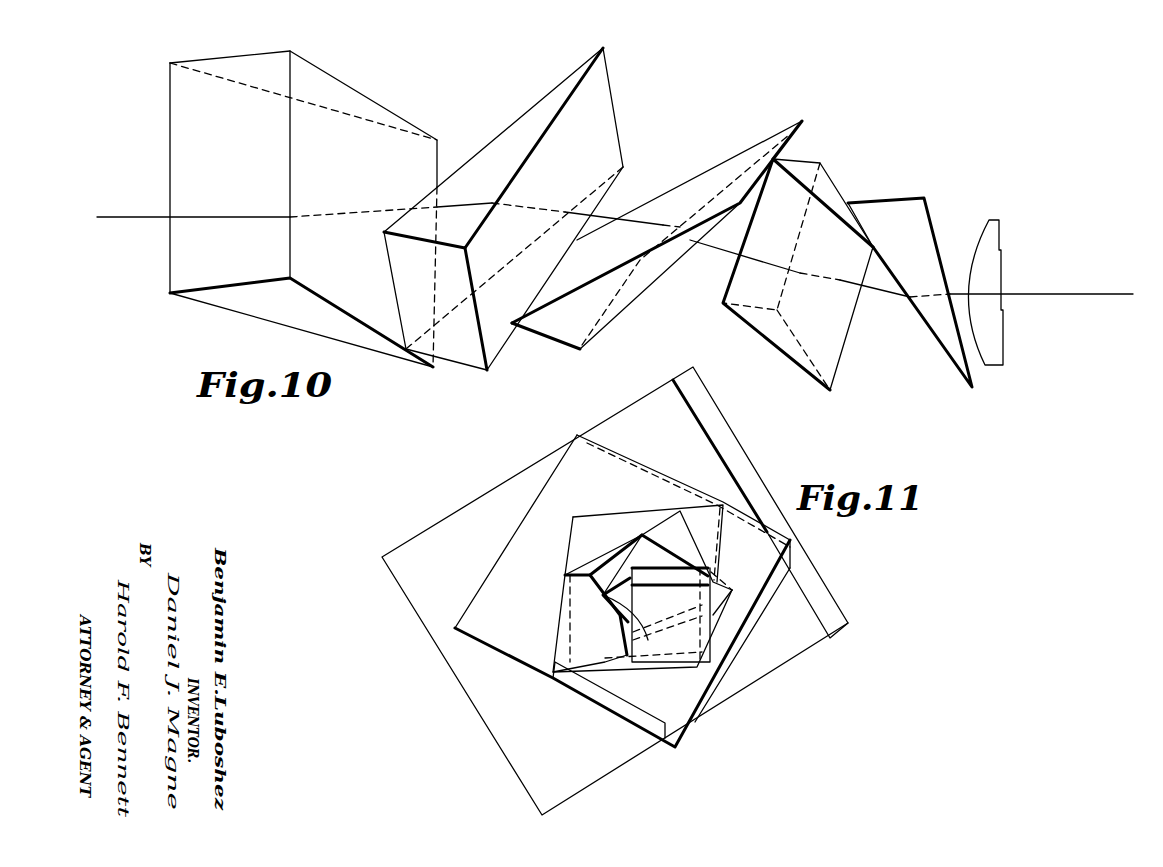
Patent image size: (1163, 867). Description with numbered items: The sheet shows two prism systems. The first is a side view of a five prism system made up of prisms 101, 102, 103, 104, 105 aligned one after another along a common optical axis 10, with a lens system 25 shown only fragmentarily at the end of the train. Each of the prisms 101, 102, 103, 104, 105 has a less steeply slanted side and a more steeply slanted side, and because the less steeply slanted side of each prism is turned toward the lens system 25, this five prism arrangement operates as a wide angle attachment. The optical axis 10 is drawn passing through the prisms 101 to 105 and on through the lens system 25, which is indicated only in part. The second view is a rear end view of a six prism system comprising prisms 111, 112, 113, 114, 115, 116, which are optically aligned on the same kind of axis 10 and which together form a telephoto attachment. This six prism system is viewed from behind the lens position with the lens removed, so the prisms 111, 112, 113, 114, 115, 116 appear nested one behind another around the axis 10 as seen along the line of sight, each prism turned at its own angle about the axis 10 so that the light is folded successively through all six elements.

In FIG. 10, the optical axis 10 is at (1038, 295).
In FIG. 11, the optical axis 10 is at (673, 622).
In FIG. 10, the lens system 25 is at (990, 227).
In FIG. 10, the prism 101 is at (347, 95).
In FIG. 10, the prism 102 is at (605, 132).
In FIG. 10, the prism 103 is at (737, 163).
In FIG. 10, the prism 104 is at (825, 188).
In FIG. 10, the prism 105 is at (923, 218).
In FIG. 11, the prism 111 is at (440, 525).
In FIG. 11, the prism 112 is at (515, 642).
In FIG. 11, the prism 113 is at (588, 523).
In FIG. 11, the prism 114 is at (683, 542).
In FIG. 11, the prism 115 is at (640, 547).
In FIG. 11, the prism 116 is at (717, 605).